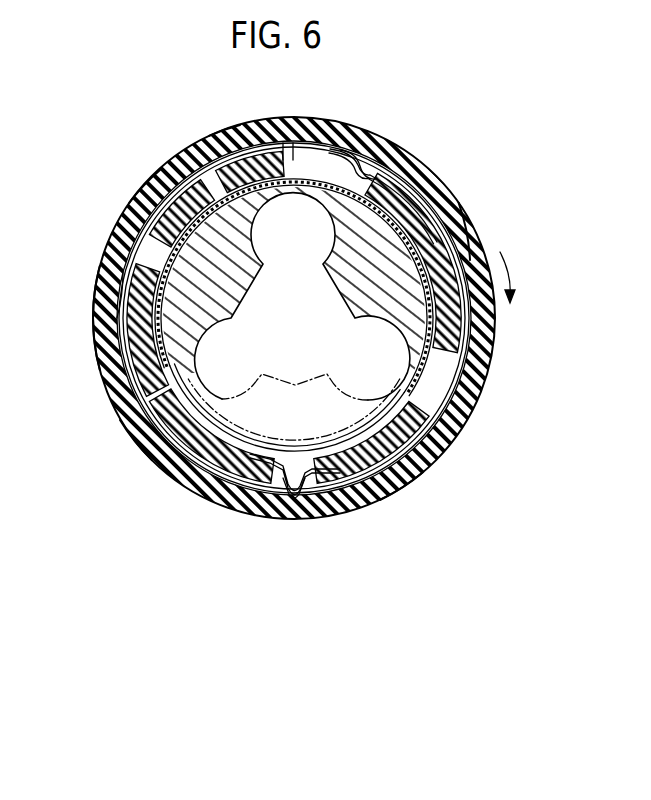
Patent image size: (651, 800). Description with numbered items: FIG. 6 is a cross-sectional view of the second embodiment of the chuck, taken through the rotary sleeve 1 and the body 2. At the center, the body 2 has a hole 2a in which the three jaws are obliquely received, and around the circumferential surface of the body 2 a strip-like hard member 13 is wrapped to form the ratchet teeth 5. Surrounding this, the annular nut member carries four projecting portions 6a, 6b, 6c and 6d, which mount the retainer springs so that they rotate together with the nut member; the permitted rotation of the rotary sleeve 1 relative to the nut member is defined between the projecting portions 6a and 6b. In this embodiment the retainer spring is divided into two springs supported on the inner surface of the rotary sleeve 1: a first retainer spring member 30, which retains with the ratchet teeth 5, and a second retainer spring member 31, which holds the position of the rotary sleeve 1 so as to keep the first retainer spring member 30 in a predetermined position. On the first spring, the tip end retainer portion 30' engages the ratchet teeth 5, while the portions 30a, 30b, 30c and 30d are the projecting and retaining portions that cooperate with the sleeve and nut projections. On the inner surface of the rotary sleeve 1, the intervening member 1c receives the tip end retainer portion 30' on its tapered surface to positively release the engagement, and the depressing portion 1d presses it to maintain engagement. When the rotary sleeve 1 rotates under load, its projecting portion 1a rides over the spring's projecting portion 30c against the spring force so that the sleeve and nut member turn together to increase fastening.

The rotary sleeve 1 is at (468, 226).
The projecting portion 1a is at (326, 518).
The intervening member 1c is at (302, 121).
The depressing portion 1d is at (255, 123).
The body 2 is at (418, 322).
The hole 2a is at (258, 242).
The ratchet teeth 5 is at (95, 283).
The strip-like hard member 13 is at (115, 383).
The retainer spring member 31 is at (112, 245).
The first retainer spring member 30 is at (294, 294).
The tip end retainer portion 30' is at (215, 113).
The projecting portion 30a is at (382, 143).
The retaining portion 30b is at (400, 490).
The projecting portion 30c is at (262, 517).
The retaining portion 30d is at (190, 162).
The projecting portion 6a is at (430, 190).
The projecting portion 6b is at (440, 449).
The projecting portion 6c is at (165, 458).
The projecting portion 6d is at (140, 205).